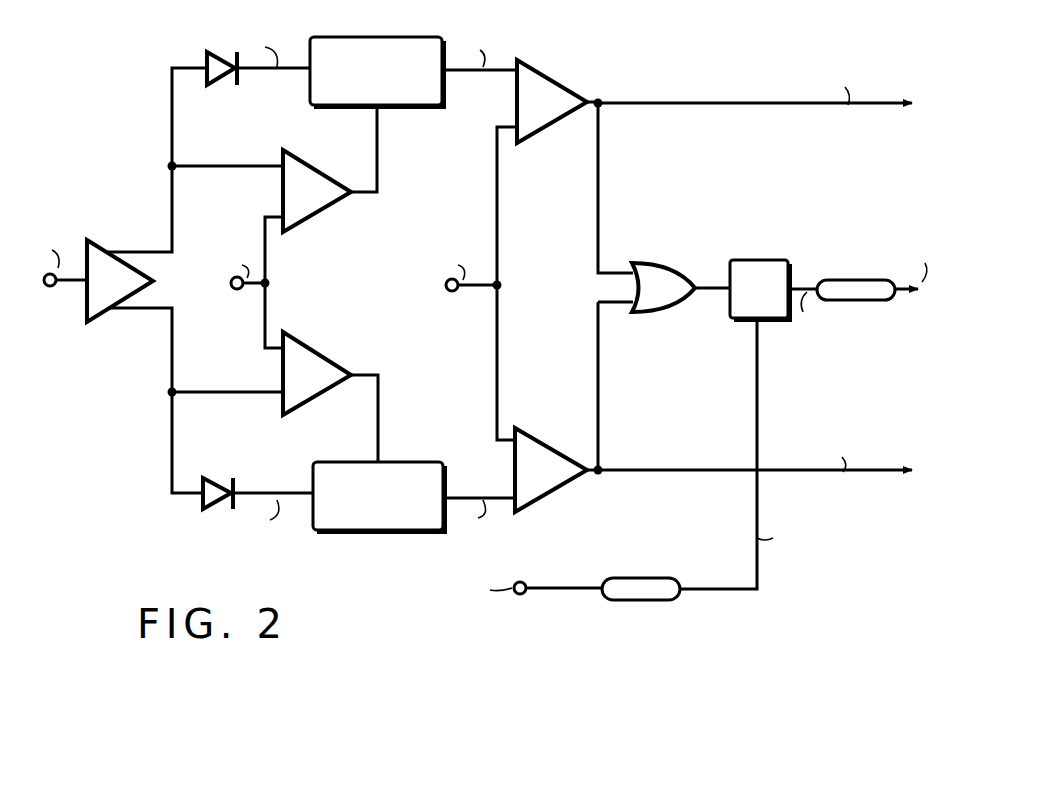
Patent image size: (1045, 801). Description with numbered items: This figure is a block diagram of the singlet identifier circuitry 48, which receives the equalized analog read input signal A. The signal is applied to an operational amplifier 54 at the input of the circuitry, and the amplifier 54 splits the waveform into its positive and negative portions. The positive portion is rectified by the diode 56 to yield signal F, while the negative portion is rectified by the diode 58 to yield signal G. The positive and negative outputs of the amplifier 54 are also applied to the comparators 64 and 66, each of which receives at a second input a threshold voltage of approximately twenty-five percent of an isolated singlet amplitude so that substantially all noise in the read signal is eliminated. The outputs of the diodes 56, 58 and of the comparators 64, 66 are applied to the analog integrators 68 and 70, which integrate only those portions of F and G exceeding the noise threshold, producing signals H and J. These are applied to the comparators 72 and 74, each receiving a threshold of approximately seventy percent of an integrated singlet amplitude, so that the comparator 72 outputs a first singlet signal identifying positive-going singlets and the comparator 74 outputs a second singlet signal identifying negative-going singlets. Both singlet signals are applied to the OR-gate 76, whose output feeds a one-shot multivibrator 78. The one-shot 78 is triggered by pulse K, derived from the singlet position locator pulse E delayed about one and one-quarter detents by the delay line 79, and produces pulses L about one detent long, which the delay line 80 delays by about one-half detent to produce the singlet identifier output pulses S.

The singlet identifier circuitry 48 is at (108, 128).
The operational amplifier 54 is at (99, 320).
The diode 56 is at (207, 58).
The diode 58 is at (225, 460).
The comparator 64 is at (317, 215).
The comparator 66 is at (312, 347).
The analog integrator 68 is at (403, 107).
The analog integrator 70 is at (397, 462).
The comparator 72 is at (553, 78).
The comparator 74 is at (540, 498).
The OR-gate 76 is at (655, 263).
The one-shot multivibrator 78 is at (763, 260).
The delay line 79 is at (662, 602).
The delay line 80 is at (862, 300).